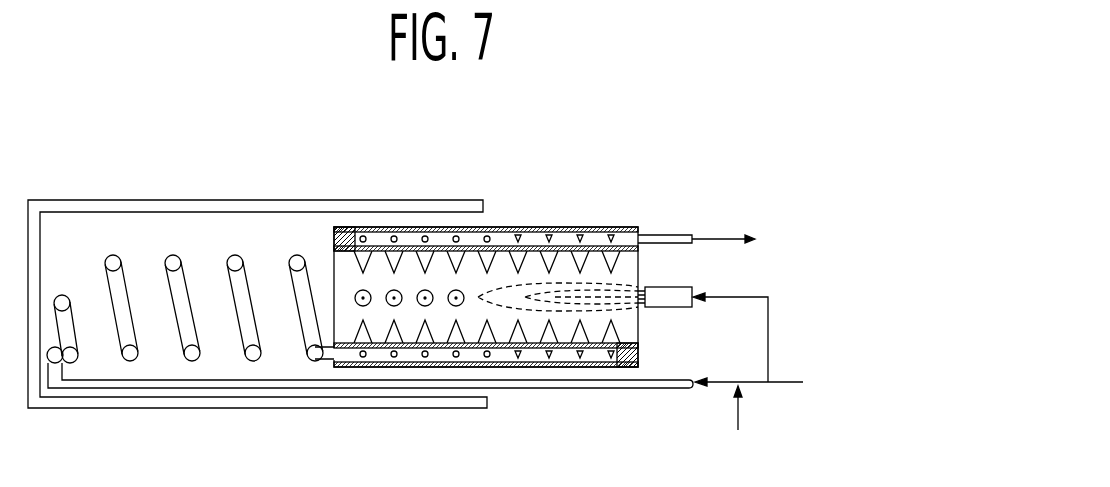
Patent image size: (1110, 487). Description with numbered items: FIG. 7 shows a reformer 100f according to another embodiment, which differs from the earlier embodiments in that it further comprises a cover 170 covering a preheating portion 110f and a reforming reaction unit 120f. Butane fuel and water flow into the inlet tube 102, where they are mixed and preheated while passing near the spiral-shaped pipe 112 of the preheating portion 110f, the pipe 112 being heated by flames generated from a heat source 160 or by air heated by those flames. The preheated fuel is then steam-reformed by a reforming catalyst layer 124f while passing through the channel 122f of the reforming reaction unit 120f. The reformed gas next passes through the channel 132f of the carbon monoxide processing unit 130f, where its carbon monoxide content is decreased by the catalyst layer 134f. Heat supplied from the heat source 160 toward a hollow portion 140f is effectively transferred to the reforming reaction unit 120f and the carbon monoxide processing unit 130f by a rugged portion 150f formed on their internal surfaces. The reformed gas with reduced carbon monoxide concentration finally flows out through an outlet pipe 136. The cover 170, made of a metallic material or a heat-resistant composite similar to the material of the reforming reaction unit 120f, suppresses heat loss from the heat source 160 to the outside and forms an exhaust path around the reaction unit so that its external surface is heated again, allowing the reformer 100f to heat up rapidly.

The reformer 100f is at (90, 128).
The preheating portion 110f is at (190, 240).
The pipe 112 is at (296, 261).
The cover 170 is at (288, 200).
The reforming reaction unit 120f is at (433, 216).
The channel 122f is at (347, 227).
The reforming catalyst layer 124f is at (393, 237).
The carbon monoxide processing unit 130f is at (567, 217).
The channel 132f is at (538, 228).
The catalyst layer 134f is at (608, 228).
The outlet pipe 136 is at (678, 238).
The hollow portion 140f is at (377, 310).
The rugged portion 150f is at (473, 262).
The heat source 160 is at (683, 287).
The inlet tube 102 is at (662, 389).